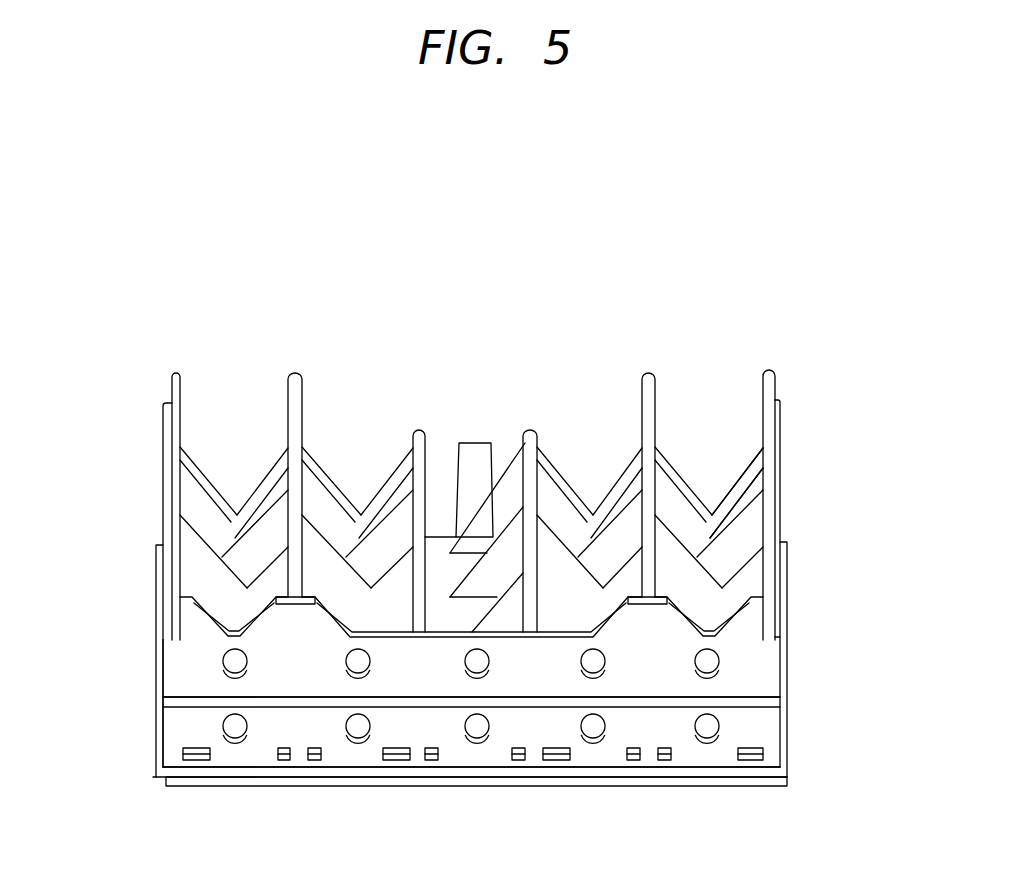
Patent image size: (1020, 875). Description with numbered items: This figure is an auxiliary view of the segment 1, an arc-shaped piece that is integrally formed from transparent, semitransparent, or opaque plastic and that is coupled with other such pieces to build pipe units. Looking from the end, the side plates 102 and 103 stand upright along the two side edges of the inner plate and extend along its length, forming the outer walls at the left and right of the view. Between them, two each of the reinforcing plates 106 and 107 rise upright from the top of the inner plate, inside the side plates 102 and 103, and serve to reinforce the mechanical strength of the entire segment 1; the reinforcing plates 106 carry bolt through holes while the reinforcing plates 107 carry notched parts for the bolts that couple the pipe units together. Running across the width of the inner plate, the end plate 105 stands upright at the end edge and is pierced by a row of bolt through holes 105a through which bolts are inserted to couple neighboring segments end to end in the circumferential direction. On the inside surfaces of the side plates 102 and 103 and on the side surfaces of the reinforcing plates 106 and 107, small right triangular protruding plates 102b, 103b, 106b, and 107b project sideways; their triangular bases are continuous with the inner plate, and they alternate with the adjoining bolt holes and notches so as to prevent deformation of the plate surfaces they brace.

The segment 1 is at (553, 786).
The side plate 102 is at (170, 445).
The protruding plates 102b is at (198, 507).
The side plate 103 is at (777, 467).
The protruding plates 103b is at (735, 510).
The end plate 105 is at (753, 668).
The bolt through holes 105a is at (710, 676).
The reinforcing plates 106 is at (293, 376).
The protruding plates 106b is at (267, 533).
The reinforcing plates 107 is at (533, 428).
The protruding plates 107b is at (387, 493).